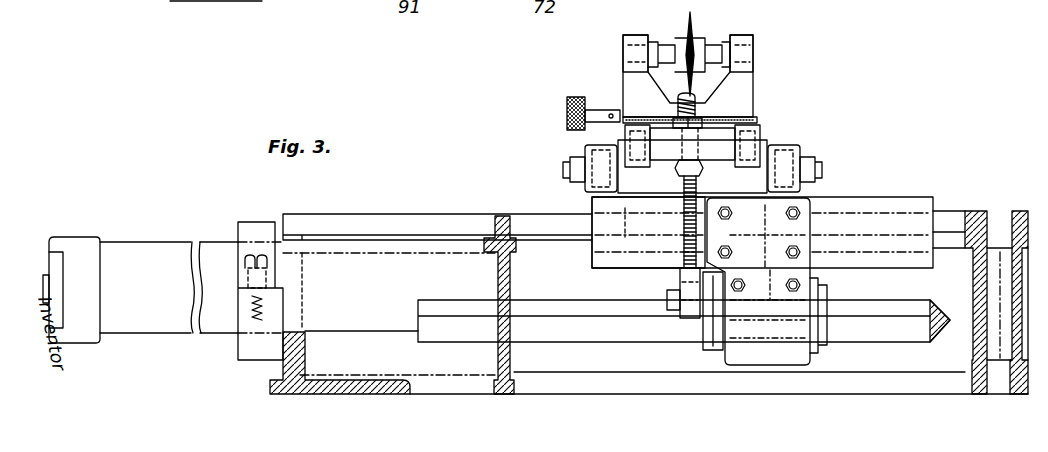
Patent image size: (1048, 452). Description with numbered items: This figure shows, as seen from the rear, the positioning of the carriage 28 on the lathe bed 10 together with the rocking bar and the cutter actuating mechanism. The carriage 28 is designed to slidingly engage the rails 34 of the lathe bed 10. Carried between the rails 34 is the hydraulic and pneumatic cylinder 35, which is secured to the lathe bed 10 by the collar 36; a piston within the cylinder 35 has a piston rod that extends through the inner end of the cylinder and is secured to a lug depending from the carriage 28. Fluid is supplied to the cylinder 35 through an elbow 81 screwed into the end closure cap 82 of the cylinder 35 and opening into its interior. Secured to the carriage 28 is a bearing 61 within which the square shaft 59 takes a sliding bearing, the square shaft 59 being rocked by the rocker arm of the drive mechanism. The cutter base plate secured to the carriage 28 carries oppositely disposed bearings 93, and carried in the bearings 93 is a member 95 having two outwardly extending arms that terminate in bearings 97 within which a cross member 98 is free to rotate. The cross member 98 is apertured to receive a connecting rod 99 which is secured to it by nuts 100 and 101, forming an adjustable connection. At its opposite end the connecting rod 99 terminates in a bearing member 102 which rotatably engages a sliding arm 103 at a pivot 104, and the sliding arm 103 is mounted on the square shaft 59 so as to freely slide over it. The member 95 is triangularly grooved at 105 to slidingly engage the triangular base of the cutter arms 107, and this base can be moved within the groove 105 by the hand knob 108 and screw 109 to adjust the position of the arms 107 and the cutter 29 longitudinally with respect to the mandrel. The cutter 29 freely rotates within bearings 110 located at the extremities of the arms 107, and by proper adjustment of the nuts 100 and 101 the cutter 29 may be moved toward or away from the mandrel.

The lathe bed 10 is at (329, 378).
The carriage 28 is at (903, 201).
The cutter 29 is at (690, 36).
The rails 34 is at (1004, 314).
The hydraulic and pneumatic cylinder 35 is at (153, 252).
The collar 36 is at (244, 232).
The square shaft 59 is at (890, 304).
The bearing 61 is at (808, 357).
The elbow 81 is at (50, 290).
The end closure cap 82 is at (70, 249).
The bearings 93 is at (585, 166).
The member 95 is at (757, 130).
The bearings 97 is at (753, 143).
The cross member 98 is at (668, 150).
The connecting rod 99 is at (690, 223).
The nut 100 is at (703, 166).
The nut 101 is at (698, 114).
The bearing member 102 is at (688, 279).
The sliding arm 103 is at (713, 304).
The pivot 104 is at (677, 298).
The triangular groove 105 is at (756, 118).
The cutter arms 107 is at (634, 81).
The hand knob 108 is at (567, 113).
The screw 109 is at (607, 121).
The bearings 110 is at (633, 53).